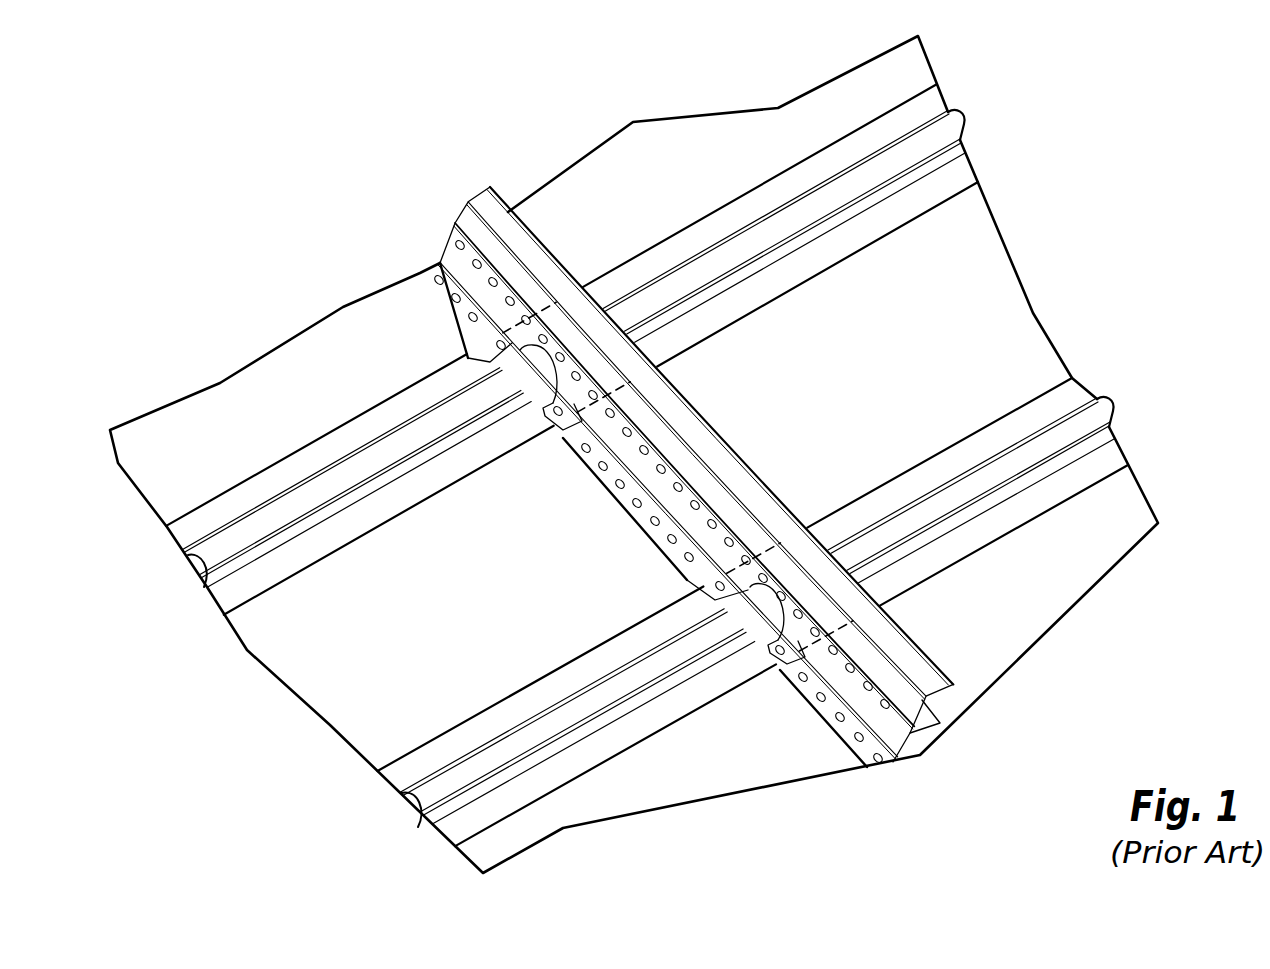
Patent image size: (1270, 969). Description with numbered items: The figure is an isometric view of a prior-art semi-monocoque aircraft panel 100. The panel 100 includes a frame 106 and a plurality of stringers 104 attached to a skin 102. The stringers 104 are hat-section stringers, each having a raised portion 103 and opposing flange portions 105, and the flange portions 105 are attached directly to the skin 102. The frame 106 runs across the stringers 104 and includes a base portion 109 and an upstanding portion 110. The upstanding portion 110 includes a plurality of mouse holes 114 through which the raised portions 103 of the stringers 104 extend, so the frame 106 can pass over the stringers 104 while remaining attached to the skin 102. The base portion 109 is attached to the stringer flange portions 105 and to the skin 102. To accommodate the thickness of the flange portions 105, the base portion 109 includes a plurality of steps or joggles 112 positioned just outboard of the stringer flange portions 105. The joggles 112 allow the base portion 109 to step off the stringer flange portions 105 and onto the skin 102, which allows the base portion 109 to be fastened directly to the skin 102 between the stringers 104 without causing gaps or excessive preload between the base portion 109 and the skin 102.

The semi-monocoque aircraft panel 100 is at (653, 454).
The skin 102 is at (1067, 563).
The raised portion 103 is at (953, 117).
The stringers 104 is at (918, 213).
The flange portions 105 is at (853, 148).
The frame 106 is at (423, 263).
The base portion 109 is at (810, 713).
The upstanding portion 110 is at (867, 680).
The joggles 112 is at (478, 342).
The mouse holes 114 is at (518, 352).